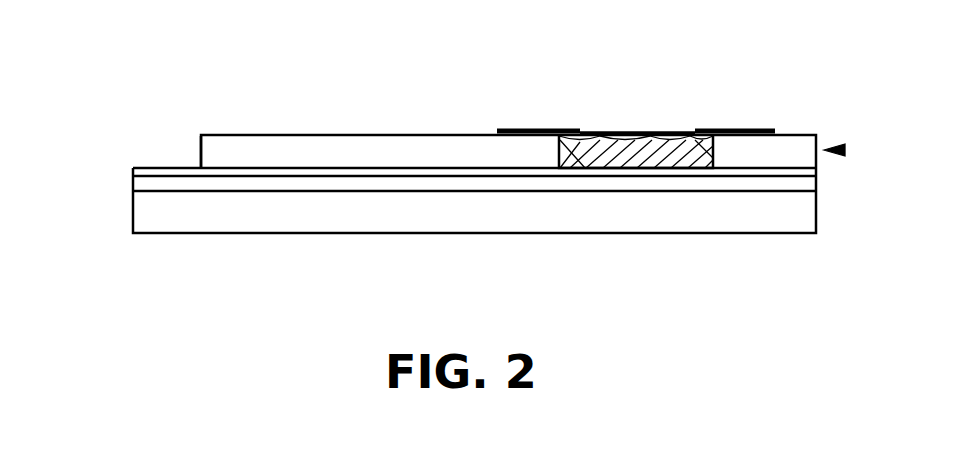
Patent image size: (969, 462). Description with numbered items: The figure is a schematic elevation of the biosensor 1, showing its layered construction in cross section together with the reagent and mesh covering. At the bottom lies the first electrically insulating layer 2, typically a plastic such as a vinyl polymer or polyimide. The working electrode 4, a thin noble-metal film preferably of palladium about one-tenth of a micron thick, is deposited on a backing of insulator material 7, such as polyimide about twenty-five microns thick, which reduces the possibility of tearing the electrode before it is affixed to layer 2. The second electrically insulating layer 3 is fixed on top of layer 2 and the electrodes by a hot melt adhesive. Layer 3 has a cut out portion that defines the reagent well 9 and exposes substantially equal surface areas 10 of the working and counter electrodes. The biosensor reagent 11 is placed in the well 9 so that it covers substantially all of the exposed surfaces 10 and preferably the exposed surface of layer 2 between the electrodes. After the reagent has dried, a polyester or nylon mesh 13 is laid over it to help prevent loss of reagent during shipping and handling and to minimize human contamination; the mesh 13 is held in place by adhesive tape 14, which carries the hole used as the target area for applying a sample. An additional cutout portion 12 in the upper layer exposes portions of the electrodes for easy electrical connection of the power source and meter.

The biosensor 1 is at (845, 150).
The first electrically insulating layer 2 is at (132, 215).
The second electrically insulating layer 3 is at (288, 135).
The working electrode 4 is at (153, 173).
The backing of insulator material 7 is at (810, 183).
The reagent well 9 is at (688, 130).
The exposed surface areas of electrodes 10 is at (562, 137).
The biosensor reagent 11 is at (640, 137).
The additional cutout portion 12 is at (198, 148).
The mesh 13 is at (618, 130).
The adhesive tape 14 is at (508, 130).